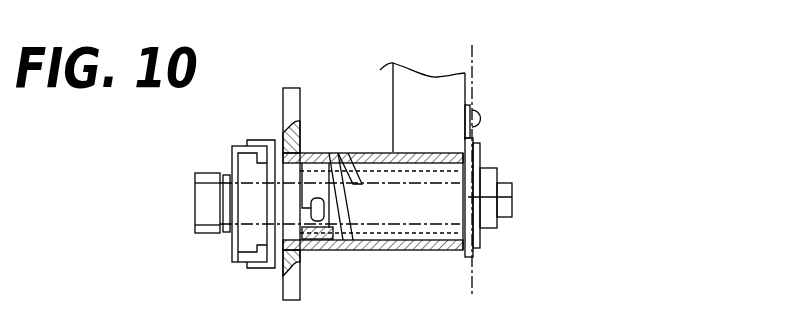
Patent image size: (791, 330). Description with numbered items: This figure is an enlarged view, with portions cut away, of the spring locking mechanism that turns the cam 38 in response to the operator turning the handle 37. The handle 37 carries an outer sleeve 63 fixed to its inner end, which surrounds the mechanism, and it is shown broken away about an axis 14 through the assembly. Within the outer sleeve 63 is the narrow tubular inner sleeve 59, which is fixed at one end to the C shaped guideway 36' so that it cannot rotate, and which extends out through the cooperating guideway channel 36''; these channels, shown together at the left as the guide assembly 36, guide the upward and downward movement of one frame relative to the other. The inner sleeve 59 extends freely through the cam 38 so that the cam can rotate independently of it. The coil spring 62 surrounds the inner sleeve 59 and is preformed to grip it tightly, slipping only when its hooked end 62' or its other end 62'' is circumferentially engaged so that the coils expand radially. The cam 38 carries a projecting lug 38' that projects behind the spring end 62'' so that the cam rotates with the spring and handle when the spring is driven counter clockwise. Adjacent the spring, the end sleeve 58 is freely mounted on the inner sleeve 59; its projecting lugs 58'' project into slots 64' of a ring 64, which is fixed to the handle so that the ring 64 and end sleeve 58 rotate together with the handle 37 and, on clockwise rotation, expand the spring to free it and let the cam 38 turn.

The axis 14 is at (473, 60).
The bracket 36 is at (218, 185).
The guideway 36' is at (219, 185).
The guideway channel 36'' is at (243, 170).
The handle 37 is at (458, 92).
The cam 38 is at (321, 180).
The projecting lug 38' is at (325, 268).
The end sleeve 58 is at (380, 167).
The projecting lugs 58'' is at (514, 184).
The inner sleeve 59 is at (378, 249).
The coil spring 62 is at (355, 238).
The hooked end 62' is at (329, 162).
The other end 62'' is at (363, 146).
The outer sleeve 63 is at (433, 250).
The ring 64 is at (510, 182).
The slots 64' is at (508, 179).